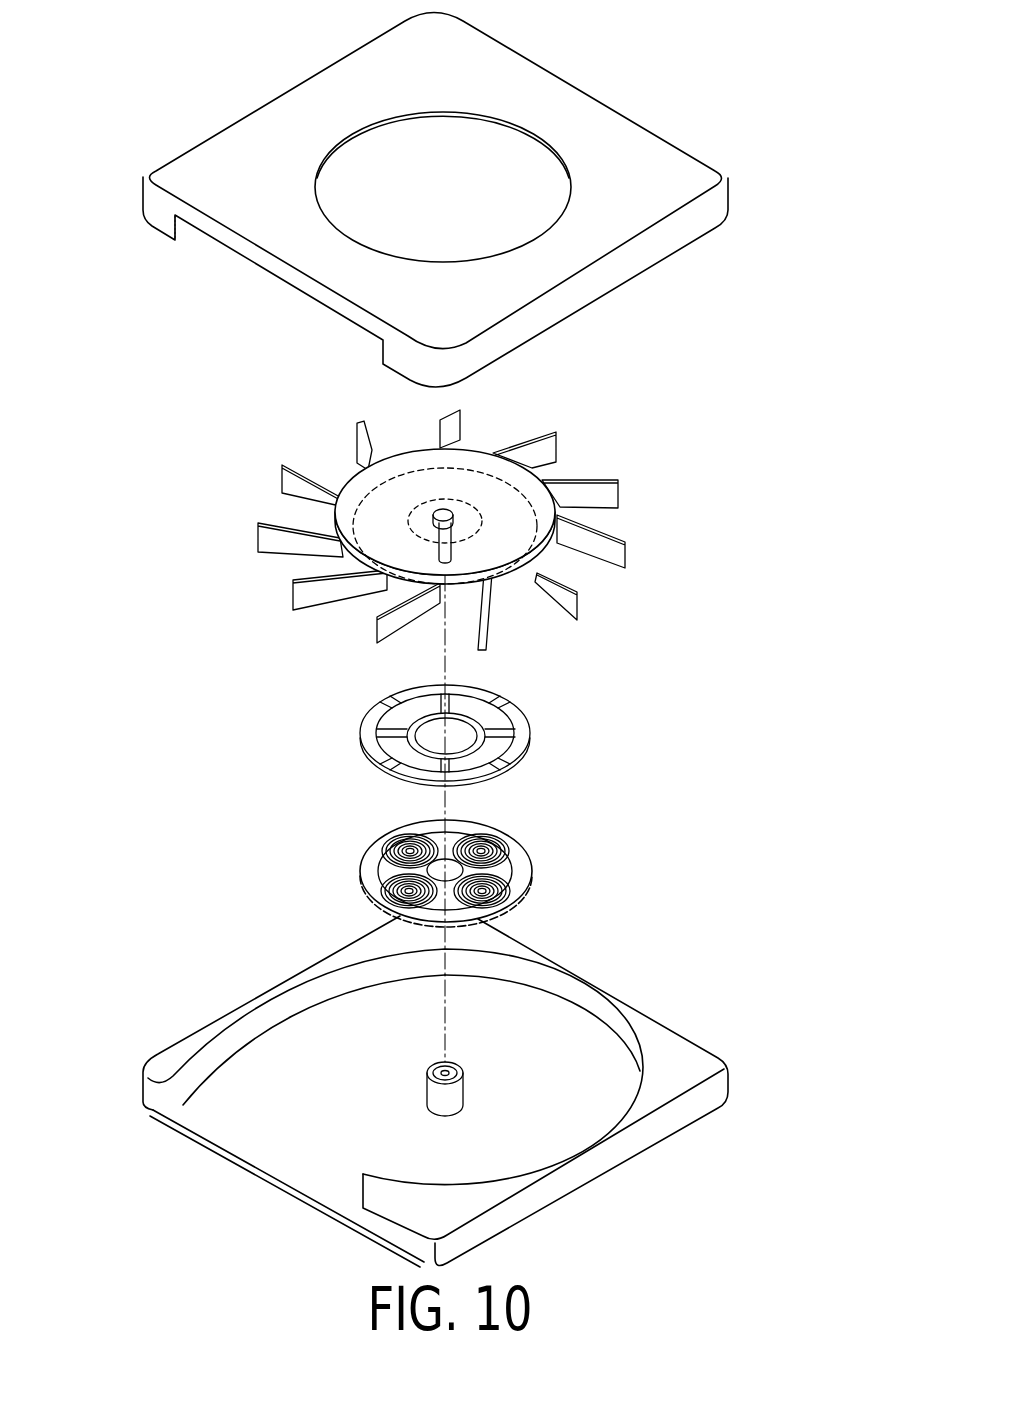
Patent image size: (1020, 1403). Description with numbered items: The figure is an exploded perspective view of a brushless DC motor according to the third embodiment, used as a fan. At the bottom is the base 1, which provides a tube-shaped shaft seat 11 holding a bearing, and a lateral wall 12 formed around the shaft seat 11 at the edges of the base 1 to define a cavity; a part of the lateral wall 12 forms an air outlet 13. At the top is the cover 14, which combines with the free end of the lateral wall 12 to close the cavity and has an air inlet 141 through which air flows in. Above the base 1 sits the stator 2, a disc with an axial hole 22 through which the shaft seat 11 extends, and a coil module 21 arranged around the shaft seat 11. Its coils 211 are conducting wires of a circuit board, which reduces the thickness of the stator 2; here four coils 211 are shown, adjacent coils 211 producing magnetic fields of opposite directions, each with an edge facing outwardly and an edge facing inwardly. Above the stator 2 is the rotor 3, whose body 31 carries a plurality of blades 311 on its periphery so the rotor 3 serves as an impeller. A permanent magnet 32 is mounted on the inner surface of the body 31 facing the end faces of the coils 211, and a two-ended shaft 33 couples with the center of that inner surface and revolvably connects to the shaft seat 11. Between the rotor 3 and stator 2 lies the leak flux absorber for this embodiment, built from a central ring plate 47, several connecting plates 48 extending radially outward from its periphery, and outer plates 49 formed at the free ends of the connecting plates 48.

The base 1 is at (419, 1091).
The shaft seat 11 is at (425, 1088).
The lateral wall 12 is at (472, 1195).
The air outlet 13 is at (262, 1147).
The cover 14 is at (435, 194).
The air inlet 141 is at (475, 147).
The stator 2 is at (471, 853).
The coil module 21 is at (515, 855).
The coil 211 is at (488, 848).
The axial hole 22 is at (437, 864).
The rotor 3 is at (458, 510).
The body 31 is at (395, 470).
The blade 311 is at (592, 487).
The permanent magnet 32 is at (503, 500).
The shaft 33 is at (498, 580).
The ring plate 47 is at (478, 745).
The connecting plate 48 is at (500, 735).
The outer plate 49 is at (528, 735).